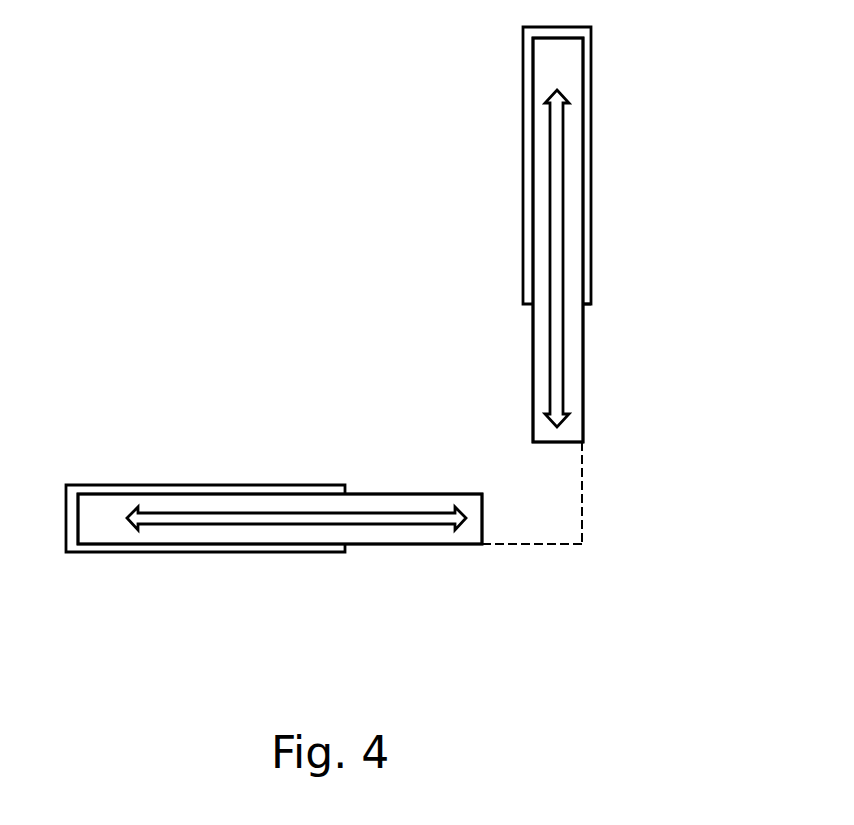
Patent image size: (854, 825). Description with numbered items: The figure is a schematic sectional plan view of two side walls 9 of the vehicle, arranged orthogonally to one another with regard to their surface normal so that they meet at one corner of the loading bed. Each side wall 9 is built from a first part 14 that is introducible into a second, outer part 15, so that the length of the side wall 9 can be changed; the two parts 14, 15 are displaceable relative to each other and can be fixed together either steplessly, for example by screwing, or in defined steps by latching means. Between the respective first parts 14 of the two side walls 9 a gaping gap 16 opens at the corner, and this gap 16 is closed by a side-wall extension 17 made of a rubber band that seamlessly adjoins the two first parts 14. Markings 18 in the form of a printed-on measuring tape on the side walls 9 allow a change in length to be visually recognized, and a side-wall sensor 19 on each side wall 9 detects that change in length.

The side wall 9 is at (567, 56).
The first part 14 is at (573, 428).
The second part 15 is at (591, 160).
The gap 16 is at (573, 522).
The side-wall extension 17 is at (542, 545).
The markings 18 is at (588, 304).
The side-wall sensor 19 is at (591, 160).